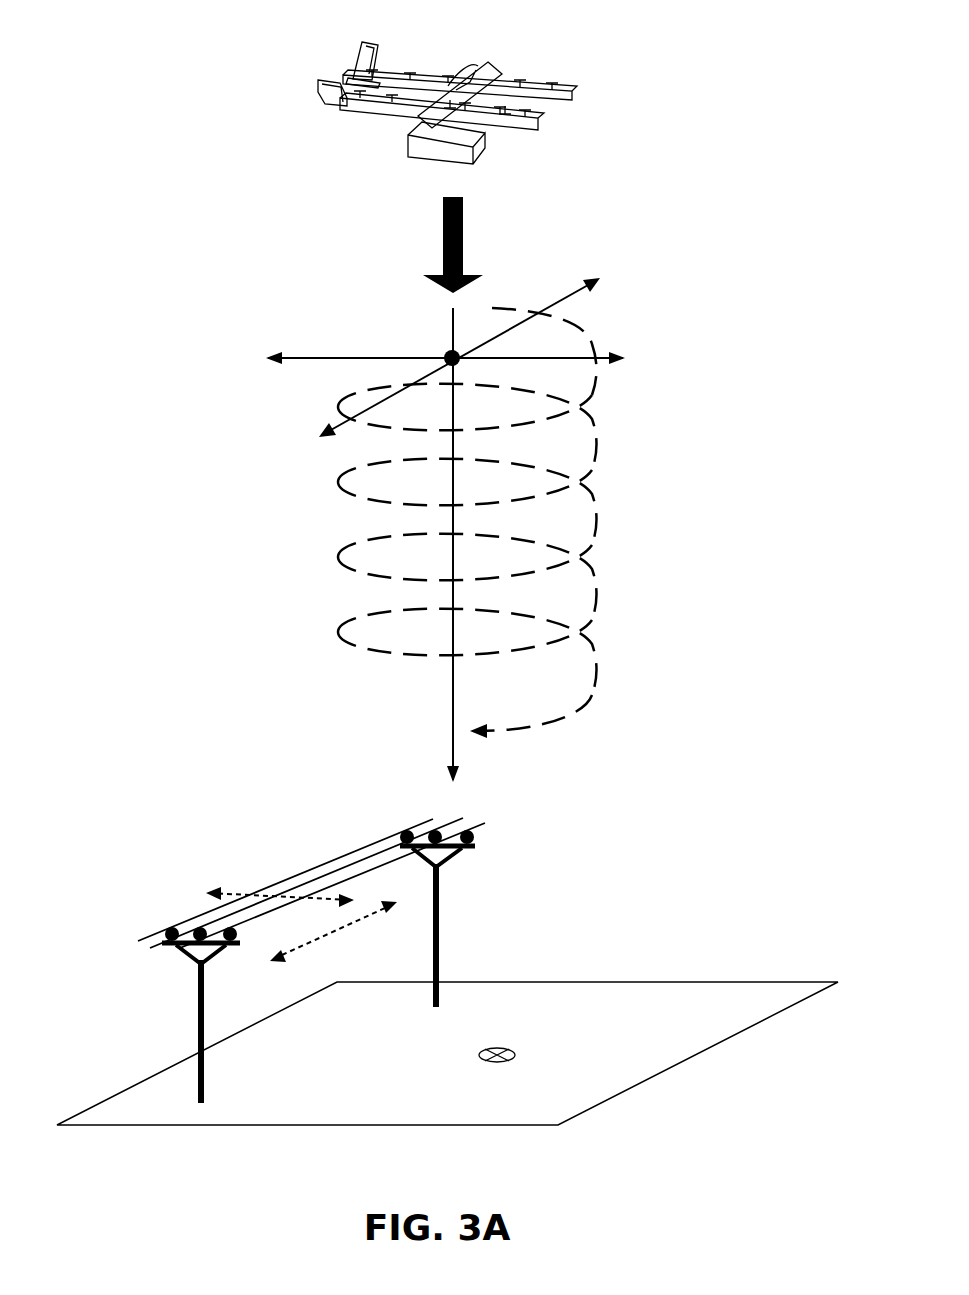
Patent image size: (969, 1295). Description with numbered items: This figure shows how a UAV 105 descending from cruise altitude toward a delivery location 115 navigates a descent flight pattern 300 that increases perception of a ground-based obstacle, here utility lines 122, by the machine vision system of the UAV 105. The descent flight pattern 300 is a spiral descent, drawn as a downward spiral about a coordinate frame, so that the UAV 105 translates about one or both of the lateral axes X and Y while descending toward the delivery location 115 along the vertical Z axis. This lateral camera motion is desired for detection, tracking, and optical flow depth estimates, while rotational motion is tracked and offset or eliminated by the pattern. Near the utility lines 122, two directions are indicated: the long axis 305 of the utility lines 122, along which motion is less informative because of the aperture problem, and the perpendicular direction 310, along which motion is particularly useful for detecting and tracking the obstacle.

The UAV 105 is at (495, 72).
The descent flight pattern 300 is at (615, 302).
The utility lines 122 is at (328, 828).
The motion perpendicular to the long axis 310 is at (225, 888).
The long axis of utility lines 305 is at (318, 938).
The delivery location 115 is at (490, 1061).